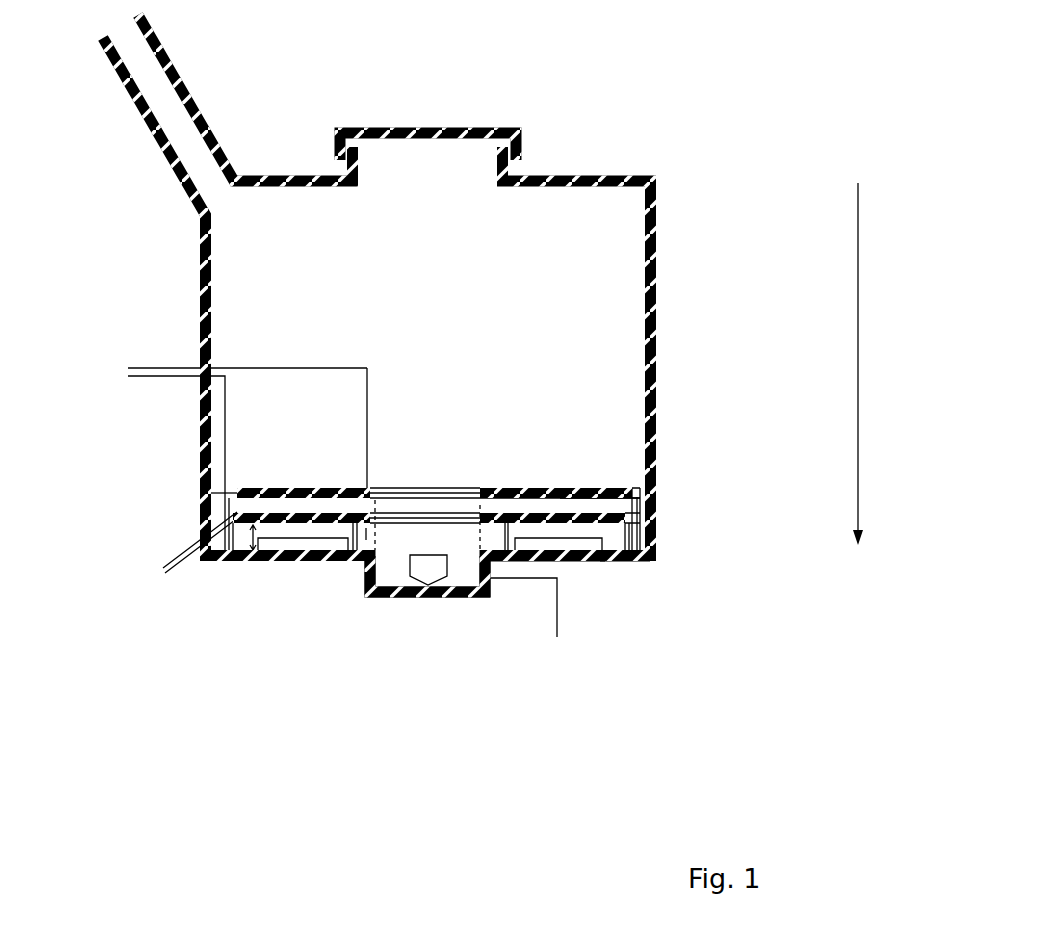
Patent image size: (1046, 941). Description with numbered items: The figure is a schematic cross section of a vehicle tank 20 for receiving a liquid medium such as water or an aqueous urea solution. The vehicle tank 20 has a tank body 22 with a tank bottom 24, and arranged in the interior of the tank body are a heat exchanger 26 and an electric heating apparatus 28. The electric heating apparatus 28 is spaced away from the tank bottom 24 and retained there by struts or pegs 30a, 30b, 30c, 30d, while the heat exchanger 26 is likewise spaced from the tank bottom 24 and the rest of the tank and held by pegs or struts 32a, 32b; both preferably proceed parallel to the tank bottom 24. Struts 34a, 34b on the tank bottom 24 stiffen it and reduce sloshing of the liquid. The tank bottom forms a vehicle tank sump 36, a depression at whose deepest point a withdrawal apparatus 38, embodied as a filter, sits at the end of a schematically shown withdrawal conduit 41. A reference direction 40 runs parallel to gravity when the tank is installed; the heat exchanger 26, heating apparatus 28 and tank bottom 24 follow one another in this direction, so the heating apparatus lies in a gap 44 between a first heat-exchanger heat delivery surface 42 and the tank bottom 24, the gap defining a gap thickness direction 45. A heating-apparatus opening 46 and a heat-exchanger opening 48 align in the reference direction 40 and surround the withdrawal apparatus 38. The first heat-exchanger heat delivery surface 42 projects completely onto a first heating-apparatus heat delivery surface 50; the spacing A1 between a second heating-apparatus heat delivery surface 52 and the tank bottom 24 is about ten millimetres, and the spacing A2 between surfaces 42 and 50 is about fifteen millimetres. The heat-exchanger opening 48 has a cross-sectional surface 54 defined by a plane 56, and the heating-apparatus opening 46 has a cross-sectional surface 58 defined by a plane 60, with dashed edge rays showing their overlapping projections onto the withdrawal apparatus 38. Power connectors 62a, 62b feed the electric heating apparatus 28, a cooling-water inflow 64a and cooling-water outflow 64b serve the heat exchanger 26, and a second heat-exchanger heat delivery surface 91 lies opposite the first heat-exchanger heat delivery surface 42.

The vehicle tank 20 is at (662, 112).
The tank body 22 is at (650, 190).
The tank bottom 24 is at (232, 562).
The heat exchanger 26 is at (515, 490).
The electric heating apparatus 28 is at (292, 490).
The strut or peg 30a is at (623, 560).
The strut or peg 30b is at (512, 562).
The strut or peg 30c is at (330, 560).
The strut or peg 30d is at (235, 565).
The strut or peg 32a is at (638, 512).
The strut or peg 32b is at (222, 562).
The strut 34a is at (545, 562).
The strut 34b is at (283, 552).
The vehicle tank sump 36 is at (385, 597).
The withdrawal apparatus 38 is at (432, 570).
The reference direction 40 is at (858, 388).
The withdrawal conduit 41 is at (542, 578).
The first heat-exchanger heat delivery surface 42 is at (605, 508).
The gap 44 is at (510, 505).
The gap thickness direction 45 is at (368, 532).
The heating-apparatus opening 46 is at (445, 498).
The heat-exchanger opening 48 is at (422, 490).
The first heating-apparatus heat delivery surface 50 is at (572, 512).
The second heating-apparatus heat delivery surface 52 is at (605, 562).
The cross-sectional surface 54 is at (388, 490).
The plane 56 is at (637, 495).
The cross-sectional surface 58 is at (390, 493).
The plane 60 is at (640, 522).
The power connector 62a is at (163, 570).
The power connector 62b is at (175, 552).
The cooling-water inflow 64a is at (128, 368).
The cooling-water outflow 64b is at (163, 376).
The second heat-exchanger heat delivery surface 91 is at (590, 500).
The spacing A1 is at (268, 493).
The spacing A2 is at (540, 500).